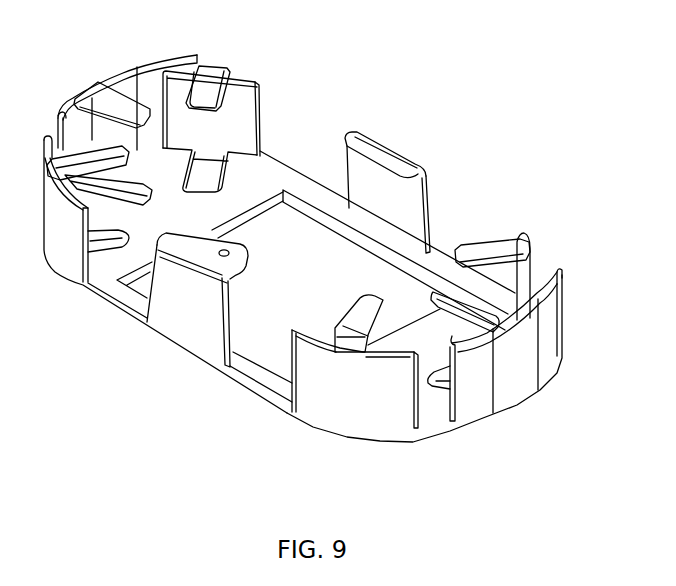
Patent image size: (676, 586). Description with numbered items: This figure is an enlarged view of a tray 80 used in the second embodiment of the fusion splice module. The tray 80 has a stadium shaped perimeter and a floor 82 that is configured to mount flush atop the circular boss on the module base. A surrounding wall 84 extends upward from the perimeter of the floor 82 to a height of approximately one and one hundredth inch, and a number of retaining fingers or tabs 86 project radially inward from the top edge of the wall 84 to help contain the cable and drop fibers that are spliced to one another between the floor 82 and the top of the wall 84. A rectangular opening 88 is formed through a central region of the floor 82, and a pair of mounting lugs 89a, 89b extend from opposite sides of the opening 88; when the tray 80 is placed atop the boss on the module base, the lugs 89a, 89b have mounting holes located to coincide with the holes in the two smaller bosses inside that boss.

The tray 80 is at (531, 403).
The floor 82 is at (272, 162).
The surrounding wall 84 is at (50, 258).
The retaining fingers or tabs 86 is at (212, 70).
The rectangular opening 88 is at (313, 212).
The mounting lug 89a is at (247, 265).
The mounting lug 89b is at (343, 323).